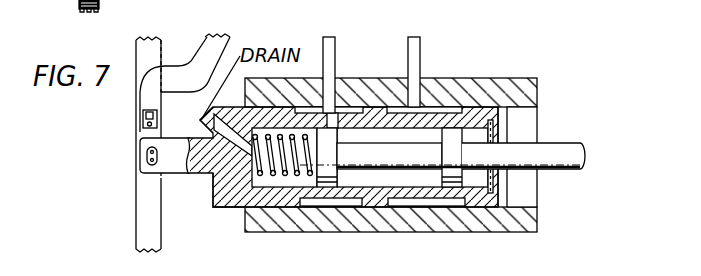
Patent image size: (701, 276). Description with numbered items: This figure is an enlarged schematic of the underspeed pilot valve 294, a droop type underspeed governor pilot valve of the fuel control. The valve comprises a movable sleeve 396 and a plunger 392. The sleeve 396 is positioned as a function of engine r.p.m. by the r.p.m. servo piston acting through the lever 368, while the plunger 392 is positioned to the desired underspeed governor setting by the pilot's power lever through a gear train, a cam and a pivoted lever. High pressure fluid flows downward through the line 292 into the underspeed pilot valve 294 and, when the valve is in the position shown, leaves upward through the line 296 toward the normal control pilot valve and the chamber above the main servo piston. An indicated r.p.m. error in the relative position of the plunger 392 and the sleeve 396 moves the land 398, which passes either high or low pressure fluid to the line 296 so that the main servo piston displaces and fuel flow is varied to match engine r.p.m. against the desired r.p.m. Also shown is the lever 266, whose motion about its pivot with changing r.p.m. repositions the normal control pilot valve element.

The lever 266 is at (211, 50).
The line 292 is at (421, 42).
The underspeed pilot valve 294 is at (551, 113).
The line 296 is at (336, 42).
The lever 368 is at (148, 208).
The plunger 392 is at (423, 158).
The movable sleeve 396 is at (227, 202).
The land 398 is at (327, 172).